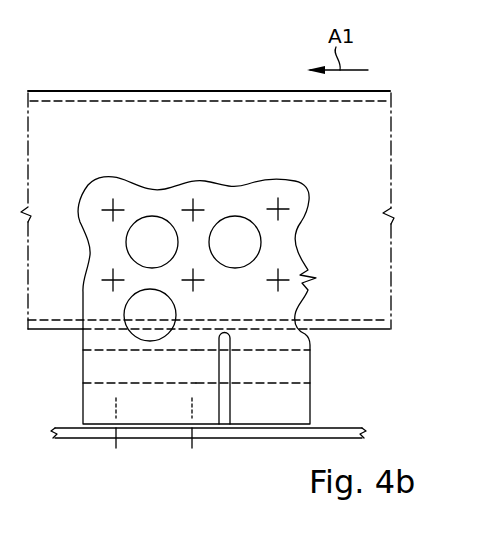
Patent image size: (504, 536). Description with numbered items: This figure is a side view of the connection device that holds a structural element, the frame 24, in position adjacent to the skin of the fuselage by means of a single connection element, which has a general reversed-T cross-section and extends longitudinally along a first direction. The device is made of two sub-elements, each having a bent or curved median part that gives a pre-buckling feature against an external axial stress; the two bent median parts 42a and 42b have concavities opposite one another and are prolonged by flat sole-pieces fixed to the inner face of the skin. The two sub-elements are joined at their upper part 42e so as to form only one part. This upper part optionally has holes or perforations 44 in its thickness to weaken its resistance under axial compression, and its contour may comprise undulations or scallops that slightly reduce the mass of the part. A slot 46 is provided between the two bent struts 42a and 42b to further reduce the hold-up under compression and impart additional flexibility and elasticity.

The frame 24 is at (380, 118).
The bent median part 42a is at (296, 368).
The bent median part 42b is at (99, 366).
The upper part 42e is at (292, 197).
The holes 44 is at (152, 236).
The slot 46 is at (223, 412).